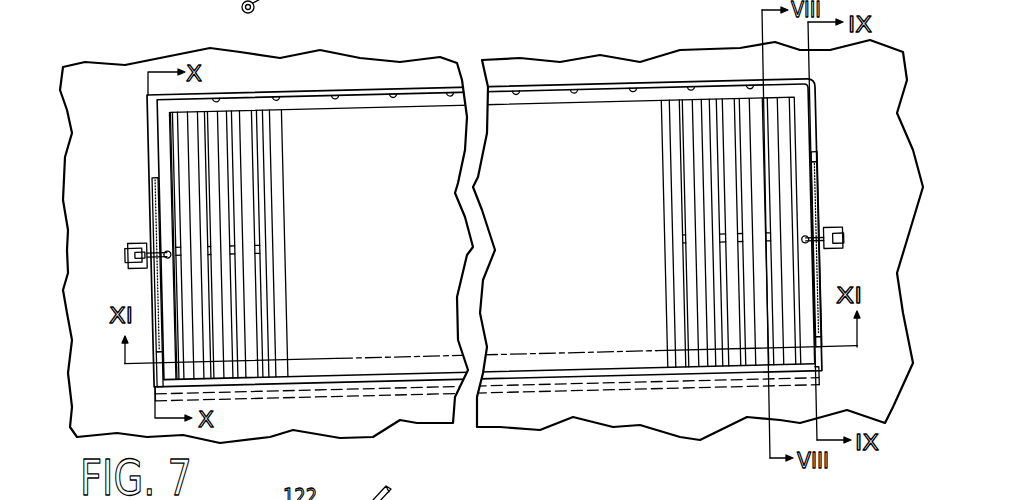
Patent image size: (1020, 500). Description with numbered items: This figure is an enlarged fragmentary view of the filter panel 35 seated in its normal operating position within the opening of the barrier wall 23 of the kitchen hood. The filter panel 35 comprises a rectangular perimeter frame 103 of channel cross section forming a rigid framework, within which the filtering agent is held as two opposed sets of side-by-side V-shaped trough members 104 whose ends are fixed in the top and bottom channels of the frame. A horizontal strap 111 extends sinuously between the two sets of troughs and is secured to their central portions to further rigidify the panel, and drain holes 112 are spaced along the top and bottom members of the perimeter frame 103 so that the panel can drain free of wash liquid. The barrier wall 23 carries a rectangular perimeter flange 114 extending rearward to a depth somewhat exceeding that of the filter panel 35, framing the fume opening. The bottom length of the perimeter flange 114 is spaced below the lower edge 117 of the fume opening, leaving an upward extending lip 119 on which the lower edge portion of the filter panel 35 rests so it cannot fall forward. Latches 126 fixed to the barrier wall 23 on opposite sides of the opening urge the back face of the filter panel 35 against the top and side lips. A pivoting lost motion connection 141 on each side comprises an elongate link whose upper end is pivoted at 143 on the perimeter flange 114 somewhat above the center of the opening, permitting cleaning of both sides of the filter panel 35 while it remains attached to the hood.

The barrier wall 23 is at (93, 147).
The filter panel 35 is at (672, 80).
The perimeter frame 103 is at (603, 95).
The trough members 104 is at (668, 272).
The horizontal strap 111 is at (262, 251).
The drain holes 112 is at (290, 100).
The perimeter flange 114 is at (362, 99).
The lower edge 117 is at (364, 376).
The lip 119 is at (389, 388).
The latches 126 is at (835, 228).
The pivoting lost motion connection 141 is at (813, 153).
The pivot 143 is at (821, 168).